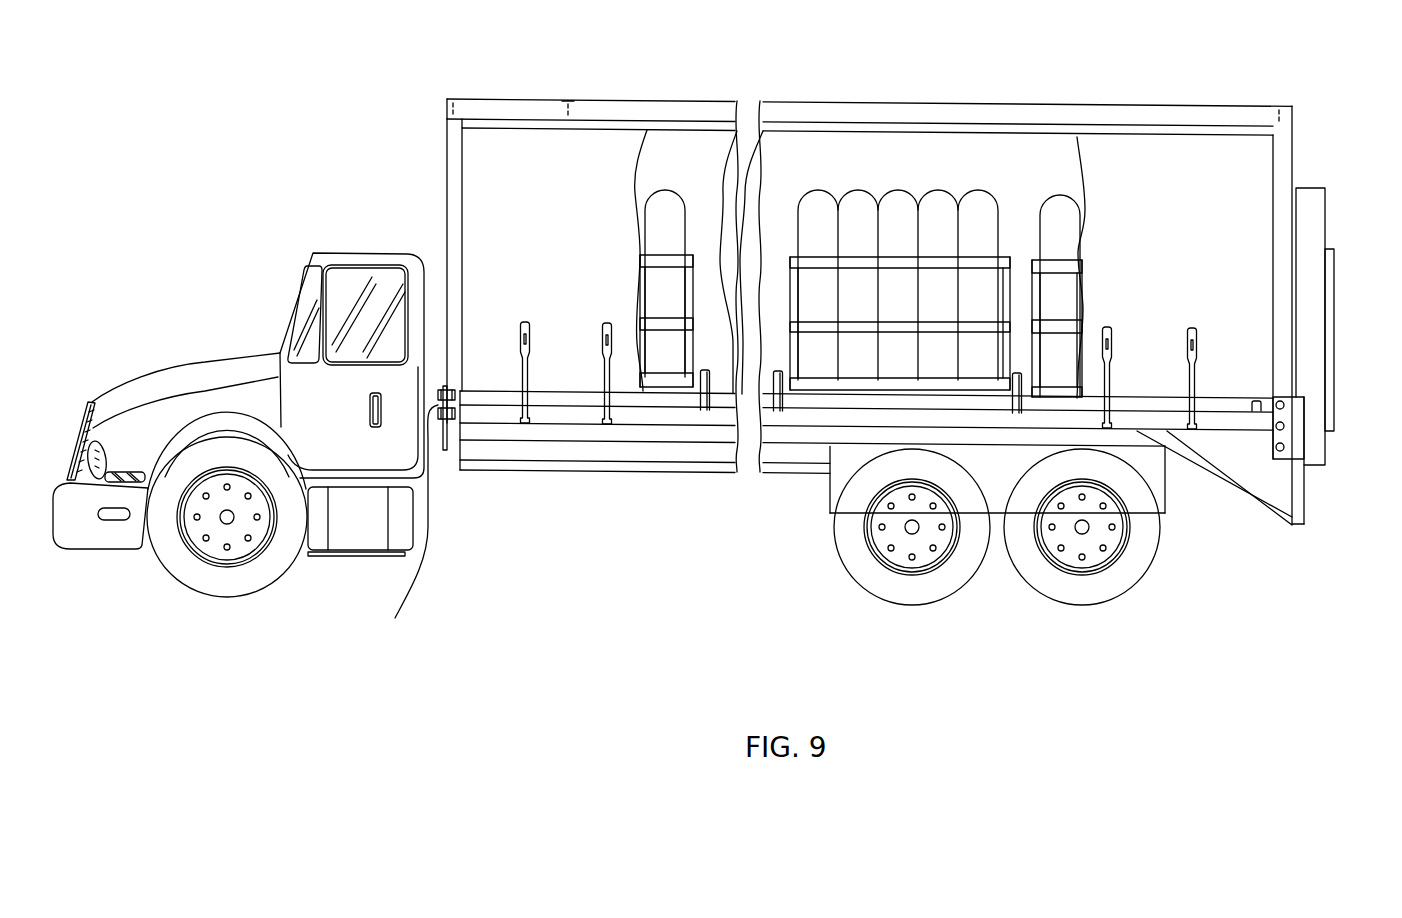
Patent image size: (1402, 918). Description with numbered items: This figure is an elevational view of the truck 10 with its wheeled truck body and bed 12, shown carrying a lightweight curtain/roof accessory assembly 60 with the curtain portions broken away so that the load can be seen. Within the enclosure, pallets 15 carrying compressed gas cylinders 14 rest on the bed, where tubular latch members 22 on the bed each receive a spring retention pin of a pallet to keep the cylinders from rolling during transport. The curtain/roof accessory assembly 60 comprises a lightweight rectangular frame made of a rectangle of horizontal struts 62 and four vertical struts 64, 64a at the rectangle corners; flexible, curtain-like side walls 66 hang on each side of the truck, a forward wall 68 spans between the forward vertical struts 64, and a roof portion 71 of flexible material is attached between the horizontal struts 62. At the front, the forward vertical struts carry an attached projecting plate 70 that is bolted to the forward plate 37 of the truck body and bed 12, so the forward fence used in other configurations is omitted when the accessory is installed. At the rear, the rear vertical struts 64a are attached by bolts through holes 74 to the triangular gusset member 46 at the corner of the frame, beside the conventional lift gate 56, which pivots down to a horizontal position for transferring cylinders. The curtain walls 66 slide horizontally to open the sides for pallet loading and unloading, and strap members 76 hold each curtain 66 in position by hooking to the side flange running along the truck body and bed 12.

The truck 10 is at (172, 360).
The truck body and bed 12 is at (670, 482).
The compressed gas cylinders 14 is at (855, 212).
The pallets 15 is at (823, 387).
The tubular latch members 22 is at (773, 368).
The forward plate 37 is at (450, 430).
The triangular gusset member 46 is at (1236, 462).
The lift gate 56 is at (1310, 225).
The curtain/roof accessory assembly 60 is at (934, 98).
The horizontal struts 62 is at (453, 110).
The forward vertical struts 64 is at (453, 162).
The rear vertical struts 64a is at (1280, 226).
The curtain-like side walls 66 is at (565, 215).
The forward wall 68 is at (446, 203).
The projecting plate 70 is at (404, 529).
The roof portion 71 is at (570, 104).
The holes 74 is at (1283, 448).
The strap members 76 is at (601, 373).